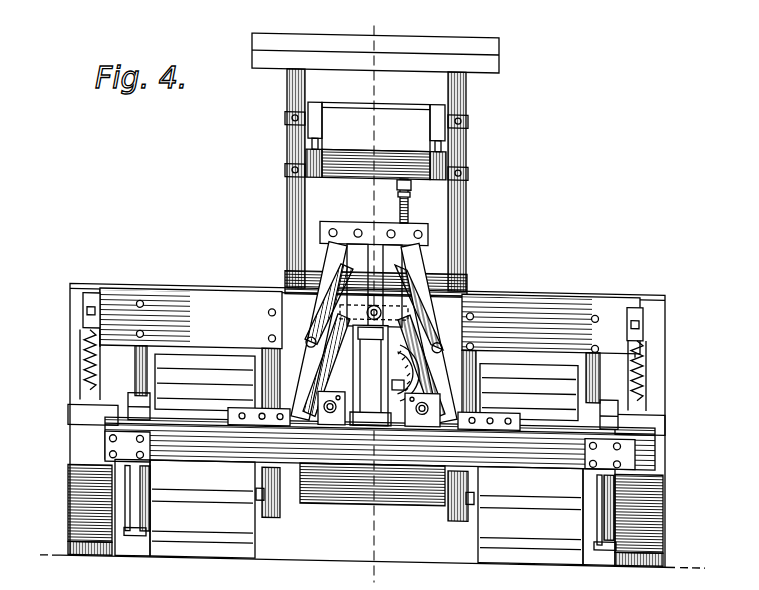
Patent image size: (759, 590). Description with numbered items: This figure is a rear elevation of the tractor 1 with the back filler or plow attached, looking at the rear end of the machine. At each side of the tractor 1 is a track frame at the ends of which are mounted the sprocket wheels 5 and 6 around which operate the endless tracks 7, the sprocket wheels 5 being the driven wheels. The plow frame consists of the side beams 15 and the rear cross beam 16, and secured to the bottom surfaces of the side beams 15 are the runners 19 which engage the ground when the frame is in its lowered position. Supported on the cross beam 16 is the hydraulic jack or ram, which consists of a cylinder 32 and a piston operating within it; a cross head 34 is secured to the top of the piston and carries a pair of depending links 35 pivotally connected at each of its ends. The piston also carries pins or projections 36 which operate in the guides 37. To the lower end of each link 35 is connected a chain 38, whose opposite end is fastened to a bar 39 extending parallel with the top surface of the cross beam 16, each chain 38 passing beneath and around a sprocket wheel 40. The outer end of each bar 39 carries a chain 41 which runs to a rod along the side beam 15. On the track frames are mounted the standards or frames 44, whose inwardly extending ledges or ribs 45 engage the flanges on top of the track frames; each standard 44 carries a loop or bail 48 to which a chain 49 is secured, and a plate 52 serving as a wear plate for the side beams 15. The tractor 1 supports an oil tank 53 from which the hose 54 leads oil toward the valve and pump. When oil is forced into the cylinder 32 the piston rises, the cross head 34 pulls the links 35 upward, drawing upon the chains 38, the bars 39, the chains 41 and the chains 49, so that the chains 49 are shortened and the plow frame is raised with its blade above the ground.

The tractor 1 is at (288, 278).
The sprocket wheel 5 is at (395, 20).
The sprocket wheel 6 is at (100, 407).
The endless track 7 is at (232, 543).
The side beam 15 is at (68, 486).
The rear cross beam 16 is at (335, 463).
The runner 19 is at (80, 546).
The cylinder 32 is at (395, 368).
The cross head 34 is at (452, 261).
The depending link 35 is at (397, 345).
The pin or projection 36 is at (355, 356).
The guide 37 is at (375, 250).
The chain 38 is at (265, 420).
The bar 39 is at (182, 414).
The sprocket wheel 40 is at (320, 426).
The chain 41 is at (128, 395).
The standard or frame 44 is at (258, 355).
The ledge or rib 45 is at (145, 489).
The loop or bail 48 is at (88, 338).
The chain 49 is at (85, 365).
The plate 52 is at (128, 494).
The oil tank 53 is at (400, 133).
The hose 54 is at (410, 204).